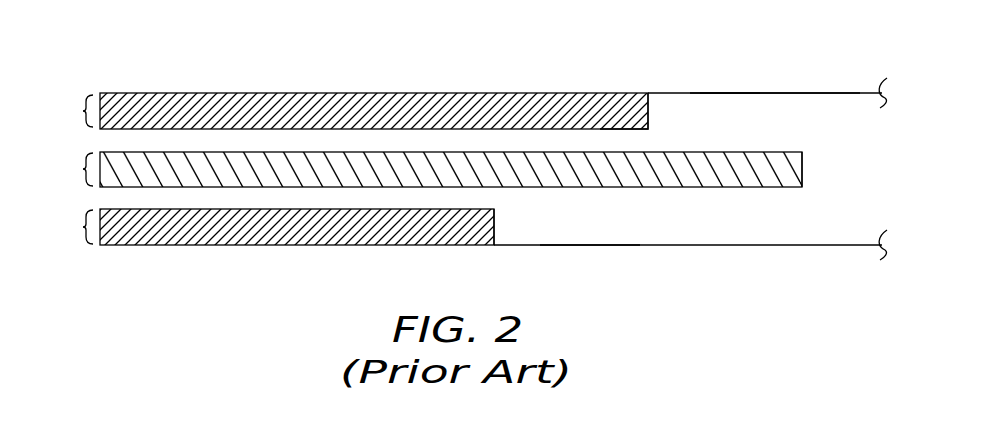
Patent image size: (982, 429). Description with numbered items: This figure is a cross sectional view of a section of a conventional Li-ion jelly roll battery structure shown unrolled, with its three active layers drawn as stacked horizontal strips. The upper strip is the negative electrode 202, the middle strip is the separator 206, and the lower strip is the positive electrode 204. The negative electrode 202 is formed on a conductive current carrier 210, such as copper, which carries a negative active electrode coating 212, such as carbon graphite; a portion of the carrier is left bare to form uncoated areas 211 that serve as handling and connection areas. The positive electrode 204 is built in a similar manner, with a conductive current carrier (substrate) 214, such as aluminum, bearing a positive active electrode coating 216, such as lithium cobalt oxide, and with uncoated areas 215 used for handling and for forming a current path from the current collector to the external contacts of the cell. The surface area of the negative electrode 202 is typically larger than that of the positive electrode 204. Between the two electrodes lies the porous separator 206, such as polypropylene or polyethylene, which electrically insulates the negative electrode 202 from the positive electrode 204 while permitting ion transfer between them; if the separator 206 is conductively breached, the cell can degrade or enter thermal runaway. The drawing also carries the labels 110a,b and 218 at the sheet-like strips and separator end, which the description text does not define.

The negative electrode 202 is at (347, 111).
The separator 206 is at (424, 169).
The positive electrode 204 is at (270, 227).
The conductive current carrier 210 is at (882, 96).
The sheets 110a,b is at (763, 87).
The uncoated areas 211 is at (720, 93).
The negative active electrode coating 212 is at (649, 108).
The spacer layer 218 is at (802, 165).
The positive active electrode coating 216 is at (495, 222).
The conductive current carrier 214 is at (882, 243).
The uncoated areas 215 is at (583, 244).